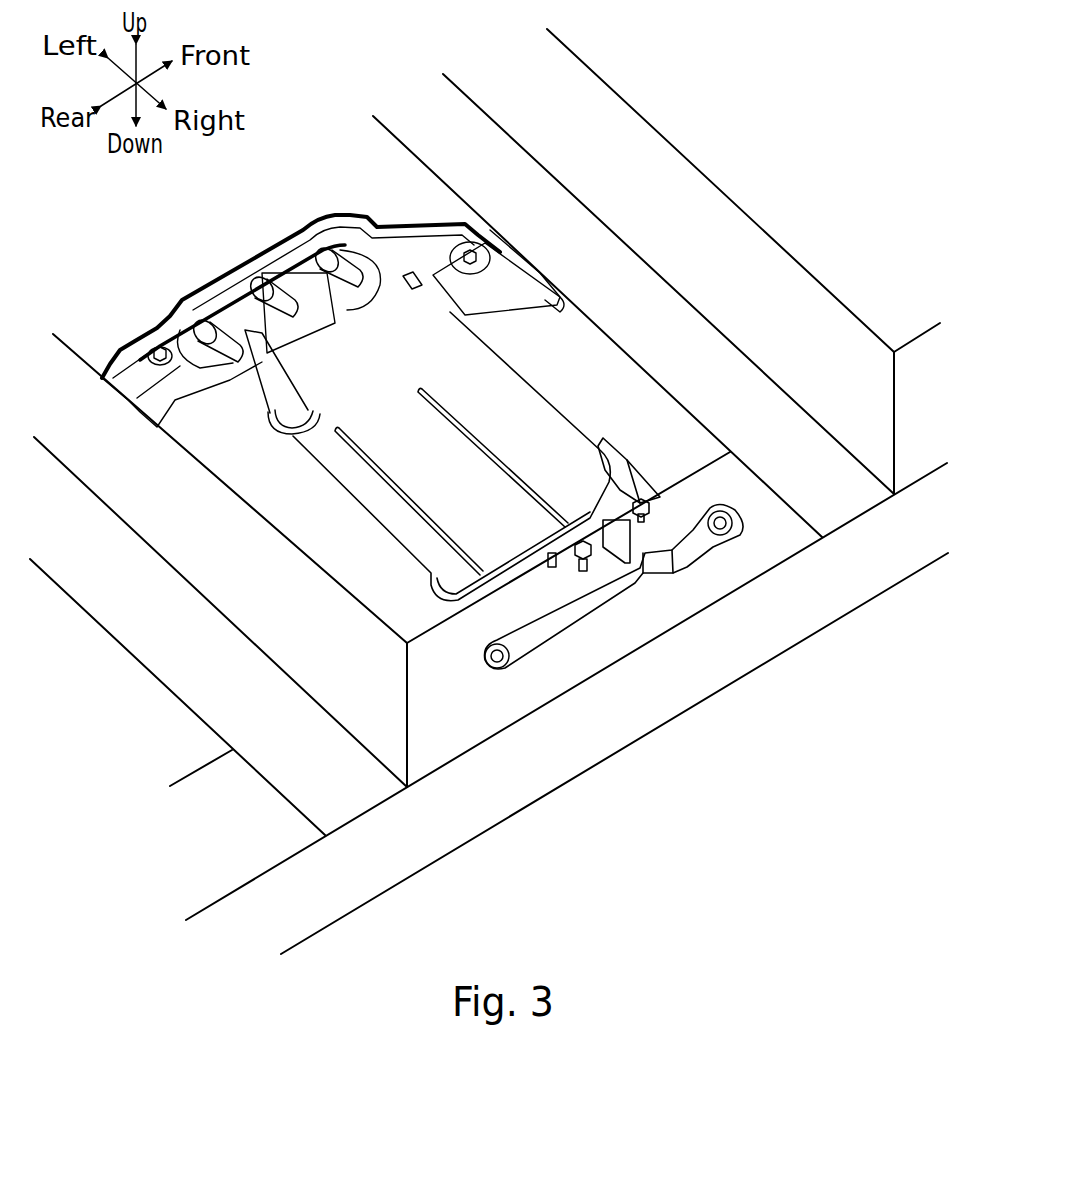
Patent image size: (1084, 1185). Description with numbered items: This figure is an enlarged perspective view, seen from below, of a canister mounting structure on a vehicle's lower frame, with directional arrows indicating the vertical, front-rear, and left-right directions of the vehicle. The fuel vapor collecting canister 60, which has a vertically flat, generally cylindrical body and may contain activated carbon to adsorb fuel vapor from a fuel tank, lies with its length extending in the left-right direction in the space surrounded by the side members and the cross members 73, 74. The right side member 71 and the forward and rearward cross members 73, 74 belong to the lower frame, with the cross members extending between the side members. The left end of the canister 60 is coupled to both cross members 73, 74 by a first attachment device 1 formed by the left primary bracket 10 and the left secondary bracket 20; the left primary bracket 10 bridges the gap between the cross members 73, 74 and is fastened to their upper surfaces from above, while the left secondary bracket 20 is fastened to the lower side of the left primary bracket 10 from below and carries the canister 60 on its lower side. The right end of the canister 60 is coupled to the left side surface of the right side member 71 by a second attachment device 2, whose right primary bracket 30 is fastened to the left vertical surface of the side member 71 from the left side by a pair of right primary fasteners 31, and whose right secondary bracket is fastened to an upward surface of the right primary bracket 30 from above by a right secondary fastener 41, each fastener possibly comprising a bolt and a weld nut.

The first attachment device 1 is at (312, 207).
The second attachment device 2 is at (473, 653).
The left primary bracket 10 is at (203, 275).
The left secondary bracket 20 is at (250, 280).
The right primary bracket 30 is at (575, 620).
The right primary fasteners 31 is at (497, 668).
The right secondary fastener 41 is at (588, 562).
The fuel vapor collecting canister 60 is at (510, 393).
The right side member 71 is at (697, 692).
The forward cross member 73 is at (707, 192).
The rearward cross member 74 is at (125, 627).